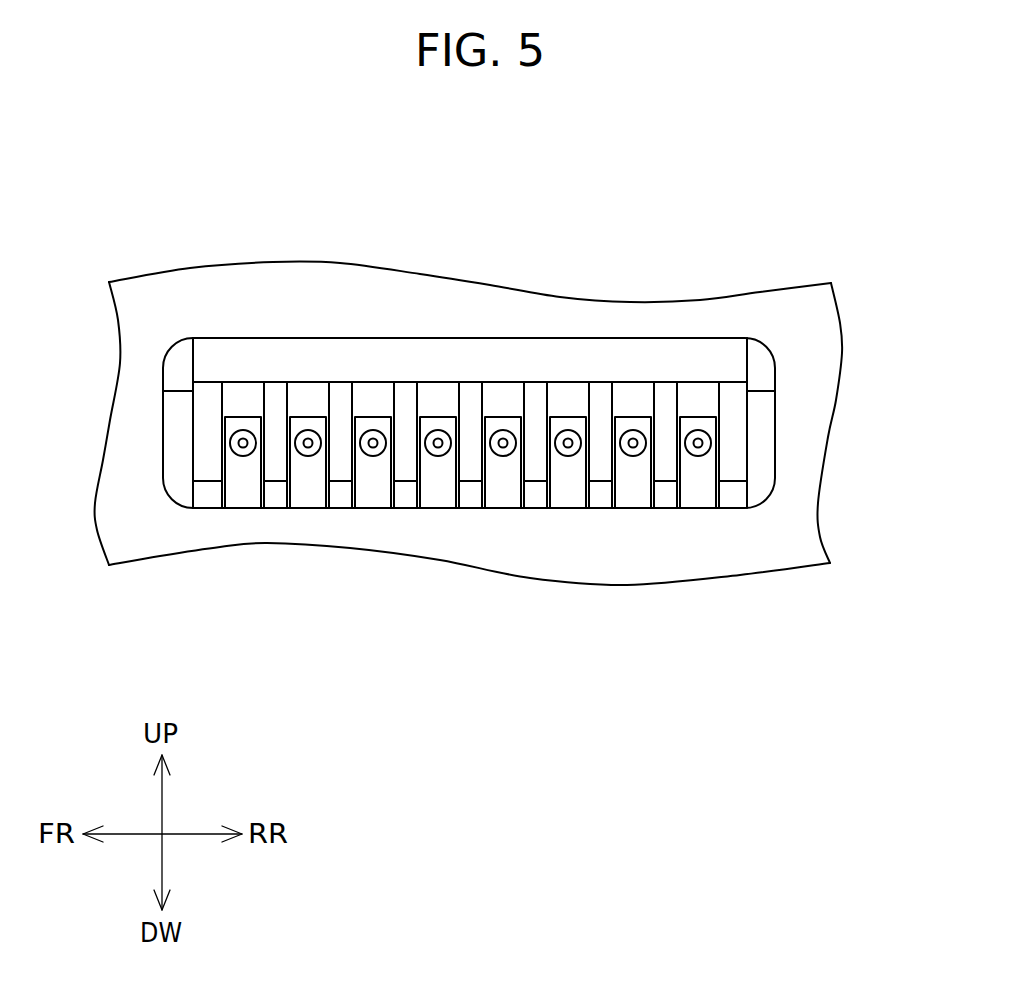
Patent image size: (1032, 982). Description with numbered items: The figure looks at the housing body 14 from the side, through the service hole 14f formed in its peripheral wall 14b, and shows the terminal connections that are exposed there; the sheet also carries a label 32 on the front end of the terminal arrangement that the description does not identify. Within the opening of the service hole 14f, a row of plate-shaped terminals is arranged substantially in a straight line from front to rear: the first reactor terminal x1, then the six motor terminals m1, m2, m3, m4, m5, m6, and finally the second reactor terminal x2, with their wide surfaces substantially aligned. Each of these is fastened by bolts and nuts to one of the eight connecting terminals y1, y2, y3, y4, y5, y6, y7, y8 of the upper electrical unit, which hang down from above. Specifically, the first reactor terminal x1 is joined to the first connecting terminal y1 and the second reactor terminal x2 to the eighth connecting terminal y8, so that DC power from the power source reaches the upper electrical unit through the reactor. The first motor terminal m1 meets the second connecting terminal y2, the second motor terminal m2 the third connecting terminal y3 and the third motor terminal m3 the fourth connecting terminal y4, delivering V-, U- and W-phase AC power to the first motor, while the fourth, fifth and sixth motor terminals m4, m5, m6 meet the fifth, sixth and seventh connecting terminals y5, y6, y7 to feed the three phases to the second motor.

The housing body 14 is at (787, 287).
The peripheral wall 14b is at (818, 350).
The service hole 14f is at (772, 403).
The bracket 32 is at (178, 433).
The first connecting terminal y1 is at (248, 392).
The second connecting terminal y2 is at (313, 392).
The third connecting terminal y3 is at (377, 392).
The fourth connecting terminal y4 is at (442, 392).
The fifth connecting terminal y5 is at (502, 395).
The sixth connecting terminal y6 is at (568, 395).
The seventh connecting terminal y7 is at (632, 395).
The eighth connecting terminal y8 is at (696, 395).
The first reactor terminal x1 is at (247, 490).
The second reactor terminal x2 is at (695, 490).
The first motor terminal m1 is at (310, 490).
The second motor terminal m2 is at (377, 490).
The third motor terminal m3 is at (441, 490).
The fourth motor terminal m4 is at (503, 490).
The fifth motor terminal m5 is at (565, 490).
The sixth motor terminal m6 is at (630, 490).